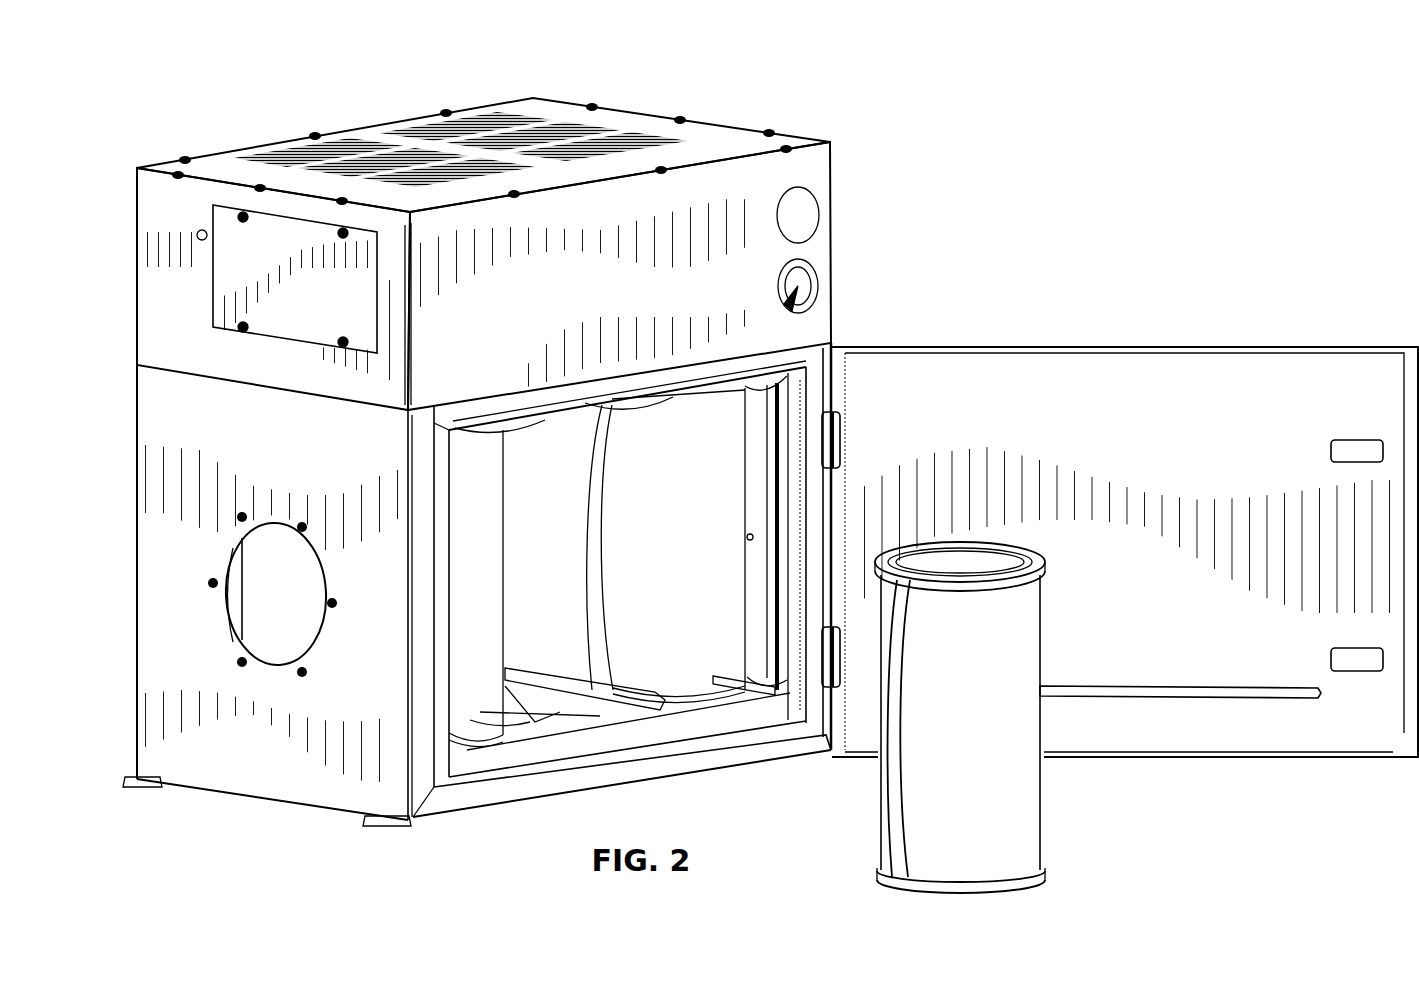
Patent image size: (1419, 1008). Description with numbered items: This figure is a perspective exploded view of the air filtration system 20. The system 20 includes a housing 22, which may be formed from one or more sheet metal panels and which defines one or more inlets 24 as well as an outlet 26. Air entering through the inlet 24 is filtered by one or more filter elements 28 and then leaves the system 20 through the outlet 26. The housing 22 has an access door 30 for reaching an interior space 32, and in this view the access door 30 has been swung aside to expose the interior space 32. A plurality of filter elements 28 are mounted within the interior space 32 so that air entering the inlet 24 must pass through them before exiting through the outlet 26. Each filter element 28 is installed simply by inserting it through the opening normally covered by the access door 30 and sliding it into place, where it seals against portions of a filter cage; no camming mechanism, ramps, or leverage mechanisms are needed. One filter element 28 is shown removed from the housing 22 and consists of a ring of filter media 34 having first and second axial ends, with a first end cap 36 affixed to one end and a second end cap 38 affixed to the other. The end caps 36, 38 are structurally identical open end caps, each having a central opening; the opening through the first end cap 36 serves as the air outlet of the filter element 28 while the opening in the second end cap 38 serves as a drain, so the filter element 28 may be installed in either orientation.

The system 20 is at (903, 78).
The housing 22 is at (170, 418).
The inlet 24 is at (235, 554).
The outlet 26 is at (698, 132).
The filter element 28 is at (257, 606).
The access door 30 is at (1285, 376).
The interior space 32 is at (628, 713).
The ring of filter media 34 is at (1023, 812).
The first end cap 36 is at (1044, 562).
The second end cap 38 is at (1045, 884).